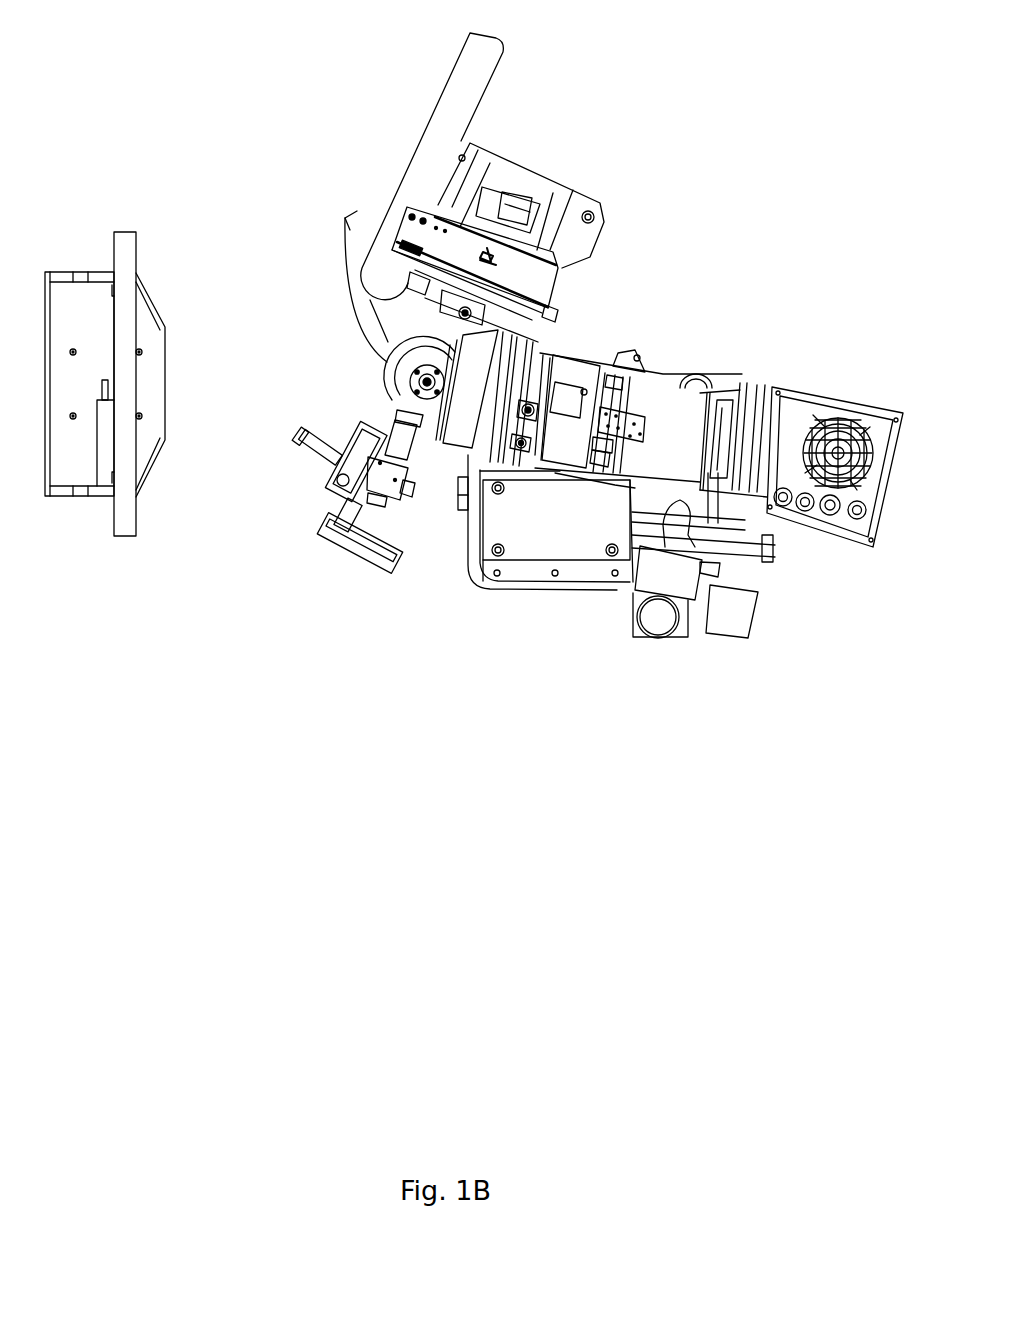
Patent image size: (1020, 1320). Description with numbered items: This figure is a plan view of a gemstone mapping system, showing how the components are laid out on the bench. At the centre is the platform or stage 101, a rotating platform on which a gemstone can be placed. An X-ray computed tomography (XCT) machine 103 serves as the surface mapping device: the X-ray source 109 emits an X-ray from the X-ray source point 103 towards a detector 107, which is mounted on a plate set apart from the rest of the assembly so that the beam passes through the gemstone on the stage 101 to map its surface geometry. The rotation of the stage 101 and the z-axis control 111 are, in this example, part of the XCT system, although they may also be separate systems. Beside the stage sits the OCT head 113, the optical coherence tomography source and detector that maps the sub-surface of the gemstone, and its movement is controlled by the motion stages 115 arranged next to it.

The platform 101 is at (376, 305).
The X-ray computed tomography (XCT) machine 103 is at (558, 353).
The detector 107 is at (144, 384).
The X-ray source 109 is at (719, 383).
The z-axis control 111 is at (423, 274).
The OCT head 113 is at (415, 527).
The motion stages 115 is at (323, 516).